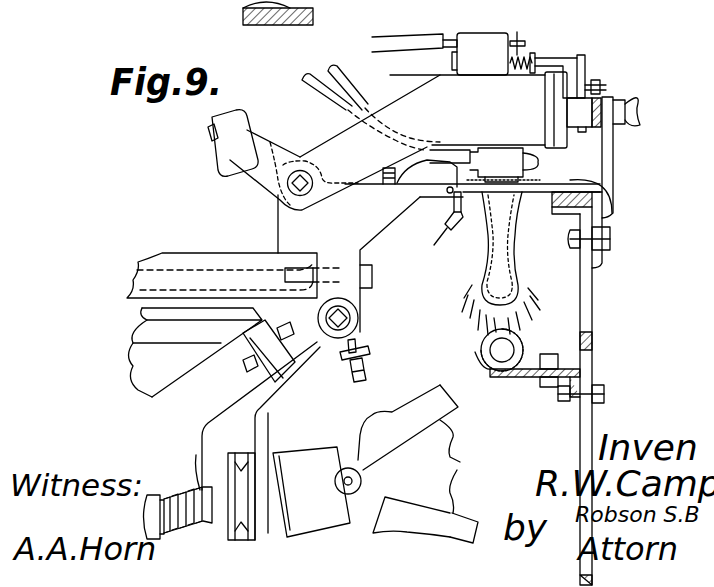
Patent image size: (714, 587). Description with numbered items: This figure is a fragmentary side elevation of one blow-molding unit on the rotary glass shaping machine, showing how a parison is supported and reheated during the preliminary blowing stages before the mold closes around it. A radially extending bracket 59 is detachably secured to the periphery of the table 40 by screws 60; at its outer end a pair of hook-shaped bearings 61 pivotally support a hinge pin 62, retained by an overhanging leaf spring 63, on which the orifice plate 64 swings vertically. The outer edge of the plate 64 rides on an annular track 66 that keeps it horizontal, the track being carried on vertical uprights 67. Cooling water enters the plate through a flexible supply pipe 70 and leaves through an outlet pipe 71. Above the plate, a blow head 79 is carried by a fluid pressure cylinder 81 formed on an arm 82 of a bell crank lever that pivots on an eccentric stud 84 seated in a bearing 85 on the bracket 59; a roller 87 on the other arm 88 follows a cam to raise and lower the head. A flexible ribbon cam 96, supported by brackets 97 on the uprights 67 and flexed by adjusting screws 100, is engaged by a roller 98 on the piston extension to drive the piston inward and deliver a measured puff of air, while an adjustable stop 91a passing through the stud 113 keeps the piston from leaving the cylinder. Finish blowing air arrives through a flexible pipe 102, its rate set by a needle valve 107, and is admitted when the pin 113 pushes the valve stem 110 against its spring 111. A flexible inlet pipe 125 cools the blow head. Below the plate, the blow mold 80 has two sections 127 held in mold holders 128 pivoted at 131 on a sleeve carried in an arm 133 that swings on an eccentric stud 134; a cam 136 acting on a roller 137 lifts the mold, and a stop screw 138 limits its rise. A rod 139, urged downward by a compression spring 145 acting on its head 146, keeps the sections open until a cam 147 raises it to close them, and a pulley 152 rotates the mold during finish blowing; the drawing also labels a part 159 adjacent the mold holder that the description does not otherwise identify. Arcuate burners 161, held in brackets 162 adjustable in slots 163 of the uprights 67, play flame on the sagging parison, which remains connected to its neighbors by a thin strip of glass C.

The table 40 is at (220, 258).
The bracket 59 is at (366, 233).
The screw 60 is at (374, 286).
The bearing 61 is at (450, 228).
The hinge pin 62 is at (447, 196).
The leaf spring 63 is at (412, 186).
The plate 64 is at (604, 194).
The annular track 66 is at (552, 200).
The vertical upright 67 is at (588, 290).
The flexible water supply pipe 70 is at (340, 88).
The outlet pipe 71 is at (446, 248).
The blow head 79 is at (518, 166).
The blow mold 80 is at (418, 464).
The fluid pressure cylinder 81 is at (440, 78).
The arm 82 is at (333, 143).
The eccentric stud 84 is at (292, 205).
The bearing 85 is at (308, 160).
The roller 87 is at (197, 167).
The arm 88 is at (250, 184).
The adjustable stop 91a is at (605, 85).
The flexible ribbon cam 96 is at (605, 118).
The bracket 97 is at (610, 162).
The roller 98 is at (570, 110).
The adjusting screw 100 is at (638, 104).
The flexible pipe 102 is at (405, 40).
The needle valve 107 is at (520, 50).
The stem 110 is at (580, 62).
The spring 111 is at (528, 63).
The pin 113 is at (566, 82).
The flexible inlet pipe 125 is at (305, 86).
The mold section 127 is at (460, 452).
The mold holder 128 is at (338, 440).
The pivot 131 is at (345, 482).
The arm 133 is at (224, 409).
The eccentric stud 134 is at (352, 322).
The cam 136 is at (130, 328).
The roller 137 is at (256, 332).
The stop screw 138 is at (372, 373).
The rod 139 is at (196, 465).
The compression spring 145 is at (228, 0).
The head 146 is at (300, 5).
The cam 147 is at (240, 22).
The pulley 152 is at (262, 545).
The edge 159 is at (316, 444).
The arcuate burner 161 is at (481, 337).
The bracket 162 is at (515, 385).
The slot 163 is at (590, 372).
The connecting strip of glass C is at (464, 238).